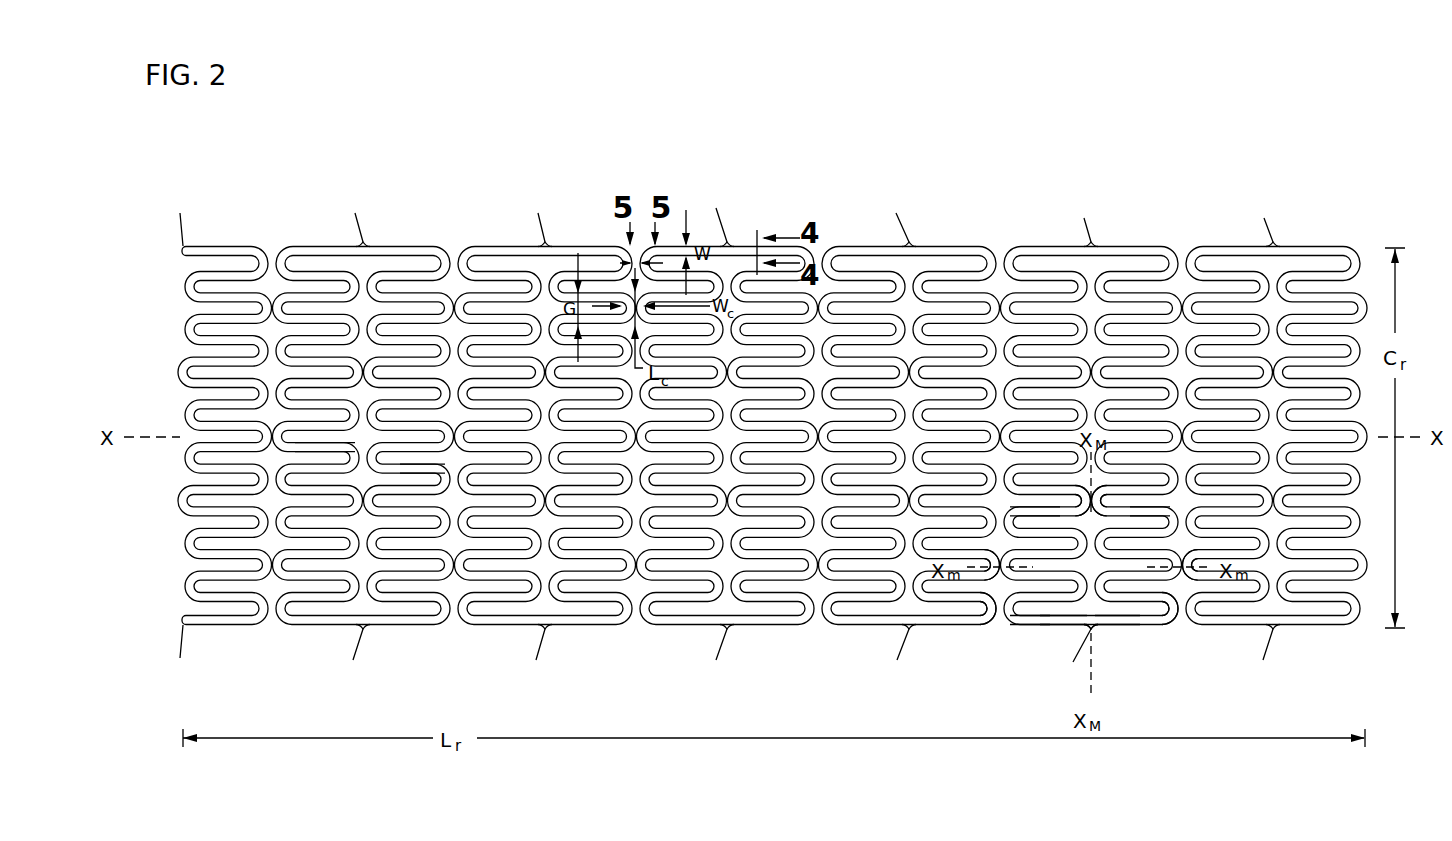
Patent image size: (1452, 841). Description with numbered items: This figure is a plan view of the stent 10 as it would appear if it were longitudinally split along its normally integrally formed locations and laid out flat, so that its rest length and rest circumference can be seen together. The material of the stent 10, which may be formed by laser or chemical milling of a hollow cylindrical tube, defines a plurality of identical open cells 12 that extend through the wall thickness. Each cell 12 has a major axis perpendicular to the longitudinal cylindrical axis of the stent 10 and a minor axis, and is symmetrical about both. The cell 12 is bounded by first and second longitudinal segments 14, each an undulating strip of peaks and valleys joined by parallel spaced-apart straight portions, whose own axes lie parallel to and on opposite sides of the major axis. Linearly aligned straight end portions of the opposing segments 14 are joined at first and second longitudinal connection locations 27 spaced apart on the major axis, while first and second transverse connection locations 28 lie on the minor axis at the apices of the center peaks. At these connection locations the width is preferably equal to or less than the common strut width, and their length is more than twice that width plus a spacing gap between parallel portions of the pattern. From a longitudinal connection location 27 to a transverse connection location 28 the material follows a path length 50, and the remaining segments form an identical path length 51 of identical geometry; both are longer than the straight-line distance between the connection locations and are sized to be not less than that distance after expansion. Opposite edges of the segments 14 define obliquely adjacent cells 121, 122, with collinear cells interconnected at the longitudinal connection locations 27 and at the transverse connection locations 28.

The stent 10 is at (990, 207).
The cell 12 is at (998, 672).
The obliquely adjacent cell 121 is at (322, 444).
The obliquely adjacent cell 122 is at (440, 472).
The longitudinal segment 14 is at (994, 636).
The longitudinal connection location 27 is at (1093, 502).
The transverse connection location 28 is at (997, 558).
The path length 50 is at (1057, 625).
The path length 51 is at (1028, 508).